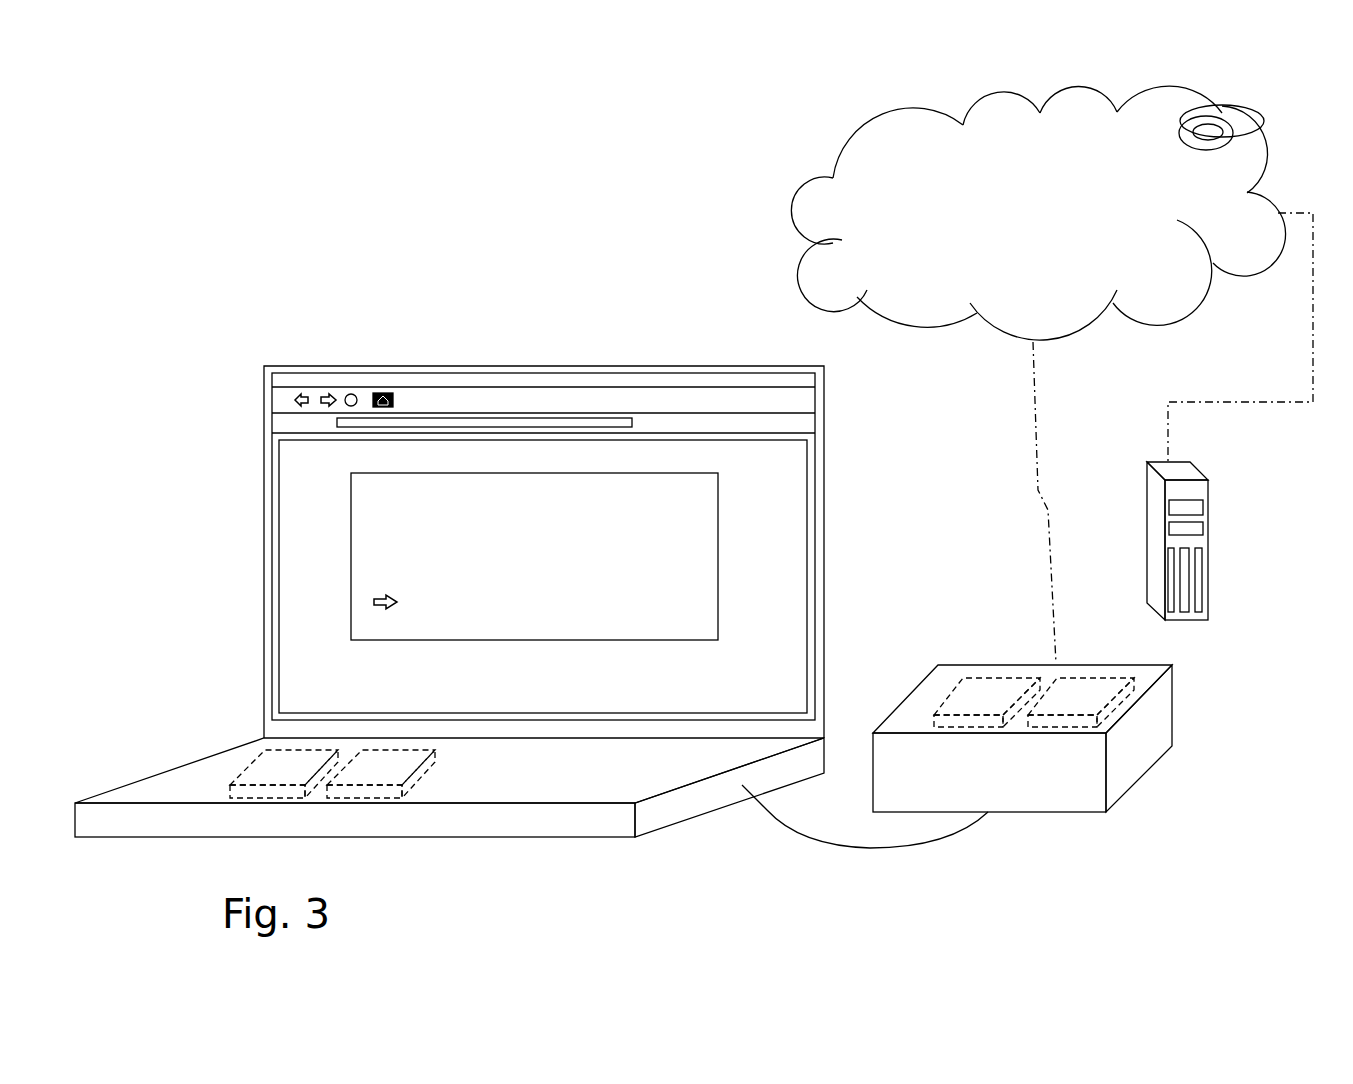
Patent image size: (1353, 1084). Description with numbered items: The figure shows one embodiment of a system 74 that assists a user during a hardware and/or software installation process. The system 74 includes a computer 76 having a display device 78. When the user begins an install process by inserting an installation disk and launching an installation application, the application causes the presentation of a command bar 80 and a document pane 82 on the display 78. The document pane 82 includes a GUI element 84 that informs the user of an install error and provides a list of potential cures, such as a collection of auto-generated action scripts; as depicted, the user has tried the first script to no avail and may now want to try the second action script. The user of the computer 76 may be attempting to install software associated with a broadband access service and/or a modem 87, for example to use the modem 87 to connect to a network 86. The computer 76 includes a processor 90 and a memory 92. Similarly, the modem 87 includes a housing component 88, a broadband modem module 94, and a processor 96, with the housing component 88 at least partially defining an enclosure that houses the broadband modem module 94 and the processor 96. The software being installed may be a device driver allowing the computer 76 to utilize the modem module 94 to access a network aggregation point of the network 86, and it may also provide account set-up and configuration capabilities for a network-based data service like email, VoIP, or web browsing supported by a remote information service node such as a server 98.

The system 74 is at (343, 207).
The computer 76 is at (187, 560).
The display device 78 is at (256, 403).
The command bar 80 is at (829, 373).
The document pane 82 is at (833, 437).
The GUI element 84 is at (357, 643).
The network 86 is at (974, 208).
The modem 87 is at (1160, 777).
The housing component 88 is at (922, 786).
The processor 90 is at (292, 784).
The memory 92 is at (388, 784).
The broadband modem module 94 is at (995, 713).
The processor 96 is at (1089, 713).
The server 98 is at (1144, 491).